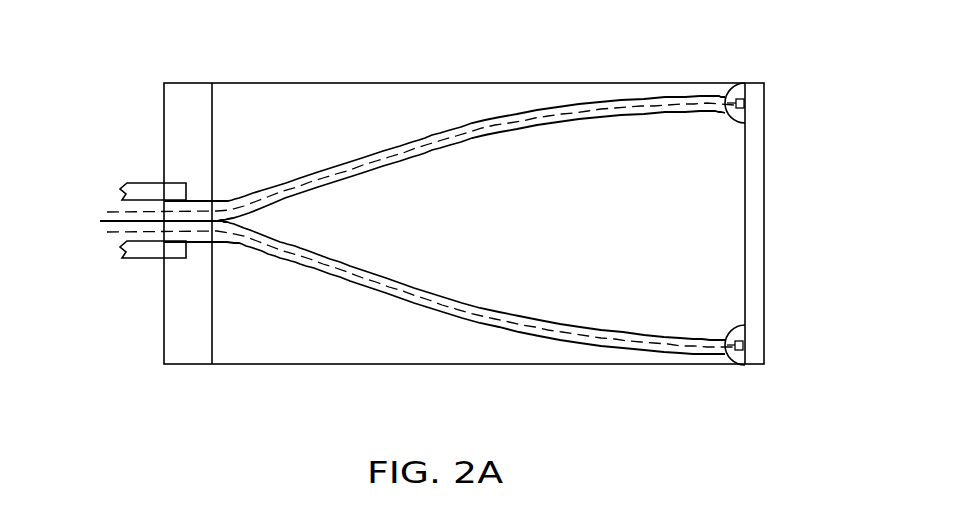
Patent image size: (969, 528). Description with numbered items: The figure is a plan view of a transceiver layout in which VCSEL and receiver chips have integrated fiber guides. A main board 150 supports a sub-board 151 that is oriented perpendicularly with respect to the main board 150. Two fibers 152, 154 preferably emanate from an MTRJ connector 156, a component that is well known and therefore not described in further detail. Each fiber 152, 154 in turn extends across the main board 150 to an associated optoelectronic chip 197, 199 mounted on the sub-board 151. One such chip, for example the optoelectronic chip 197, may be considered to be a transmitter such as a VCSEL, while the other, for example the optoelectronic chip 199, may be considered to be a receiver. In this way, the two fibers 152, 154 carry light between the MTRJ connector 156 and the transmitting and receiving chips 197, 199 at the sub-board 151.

The main board 150 is at (380, 347).
The sub-board 151 is at (752, 202).
The fiber 152 is at (448, 143).
The fiber 154 is at (453, 300).
The MTRJ connector 156 is at (132, 253).
The optoelectronic chip 197 is at (728, 118).
The optoelectronic chip 199 is at (730, 327).